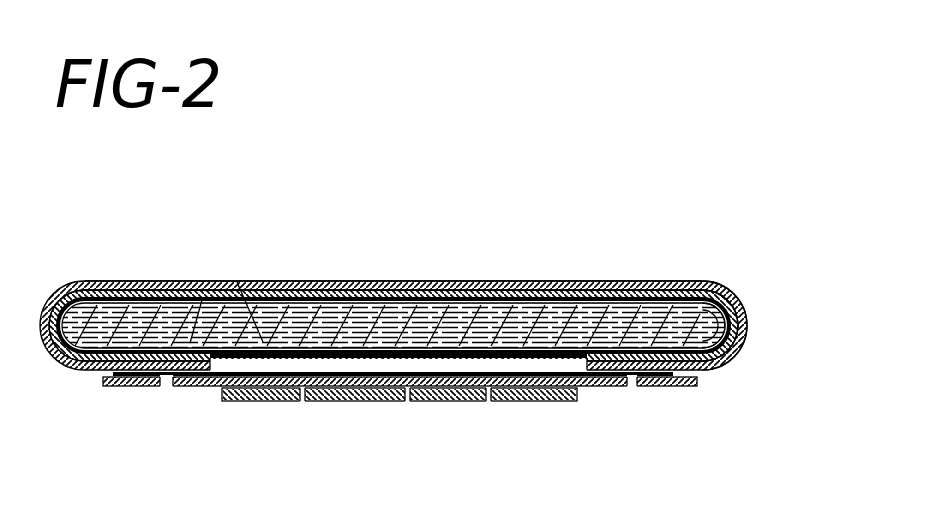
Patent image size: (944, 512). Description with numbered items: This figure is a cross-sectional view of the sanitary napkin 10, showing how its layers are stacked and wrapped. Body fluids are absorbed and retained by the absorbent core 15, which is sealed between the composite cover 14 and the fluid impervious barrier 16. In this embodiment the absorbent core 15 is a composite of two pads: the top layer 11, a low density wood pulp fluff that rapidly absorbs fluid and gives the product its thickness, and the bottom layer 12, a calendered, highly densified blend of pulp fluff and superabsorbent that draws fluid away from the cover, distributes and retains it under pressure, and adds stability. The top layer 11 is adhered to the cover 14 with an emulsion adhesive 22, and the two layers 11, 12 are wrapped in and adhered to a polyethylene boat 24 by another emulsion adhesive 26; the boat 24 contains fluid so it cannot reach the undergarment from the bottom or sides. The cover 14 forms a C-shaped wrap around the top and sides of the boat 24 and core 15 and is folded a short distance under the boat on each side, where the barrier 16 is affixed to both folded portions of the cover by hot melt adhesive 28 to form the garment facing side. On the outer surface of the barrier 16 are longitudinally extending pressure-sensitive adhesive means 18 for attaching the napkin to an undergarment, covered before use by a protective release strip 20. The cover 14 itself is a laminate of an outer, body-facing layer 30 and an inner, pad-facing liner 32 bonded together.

The sanitary napkin 10 is at (432, 294).
The top layer 11 is at (650, 320).
The bottom layer 12 is at (717, 293).
The composite cover 14 is at (485, 280).
The absorbent core 15 is at (740, 325).
The fluid impervious barrier 16 is at (102, 387).
The pressure-sensitive adhesive means 18 is at (487, 400).
The release strip 20 is at (570, 400).
The emulsion adhesive 22 is at (603, 312).
The polyethylene boat 24 is at (737, 307).
The emulsion adhesive 26 is at (237, 282).
The hot melt adhesive 28 is at (183, 387).
The outer body-facing layer 30 is at (365, 290).
The inner pad-facing layer 32 is at (297, 290).